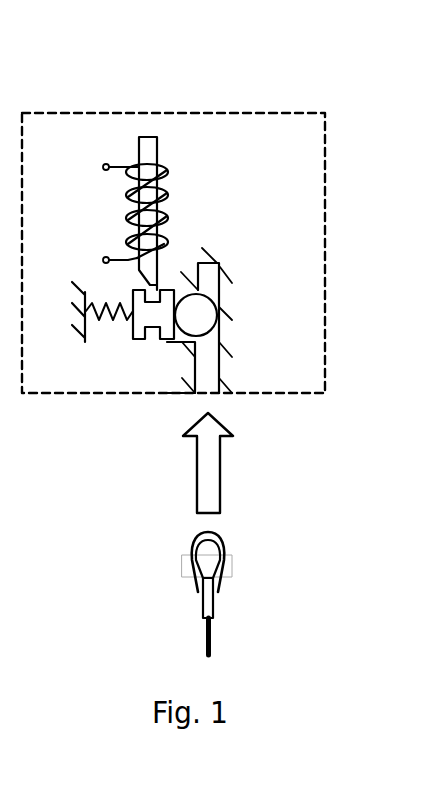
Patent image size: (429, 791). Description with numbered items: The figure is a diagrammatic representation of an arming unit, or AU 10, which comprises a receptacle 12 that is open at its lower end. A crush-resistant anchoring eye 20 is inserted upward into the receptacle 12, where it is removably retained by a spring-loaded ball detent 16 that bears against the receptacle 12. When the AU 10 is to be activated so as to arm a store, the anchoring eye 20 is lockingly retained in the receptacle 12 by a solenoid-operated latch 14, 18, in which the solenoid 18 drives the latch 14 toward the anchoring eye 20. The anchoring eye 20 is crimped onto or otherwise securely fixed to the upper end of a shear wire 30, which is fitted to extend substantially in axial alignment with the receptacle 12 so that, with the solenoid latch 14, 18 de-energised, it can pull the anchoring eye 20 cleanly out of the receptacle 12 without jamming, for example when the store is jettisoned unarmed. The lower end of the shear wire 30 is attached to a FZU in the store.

The arming unit 10 is at (330, 109).
The receptacle 12 is at (208, 362).
The solenoid-operated latch 14 is at (137, 341).
The spring-loaded ball detent 16 is at (212, 302).
The solenoid 18 is at (135, 207).
The anchoring eye 20 is at (227, 538).
The shear wire 30 is at (205, 627).